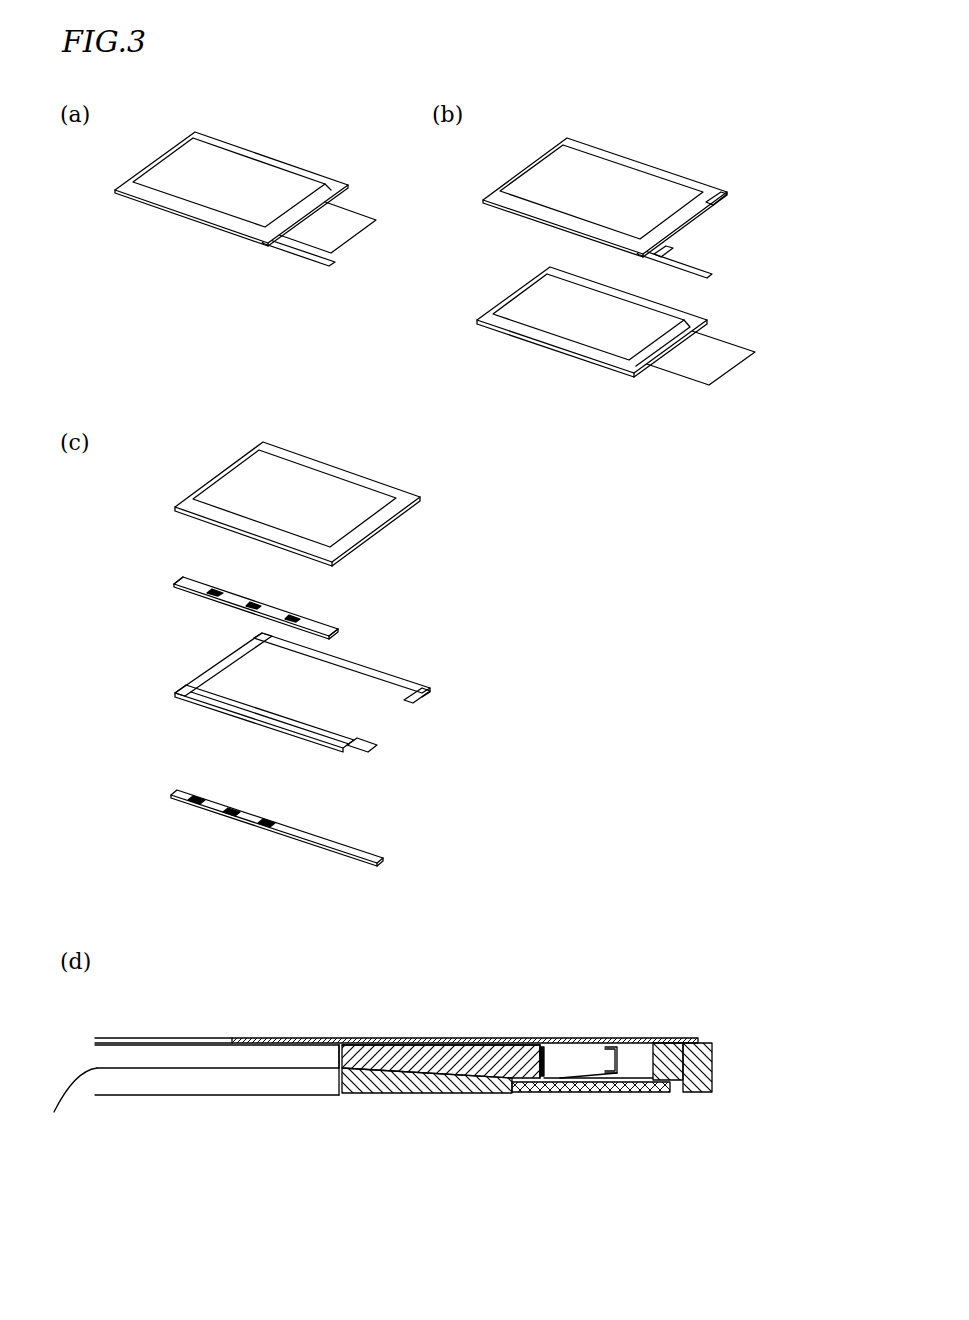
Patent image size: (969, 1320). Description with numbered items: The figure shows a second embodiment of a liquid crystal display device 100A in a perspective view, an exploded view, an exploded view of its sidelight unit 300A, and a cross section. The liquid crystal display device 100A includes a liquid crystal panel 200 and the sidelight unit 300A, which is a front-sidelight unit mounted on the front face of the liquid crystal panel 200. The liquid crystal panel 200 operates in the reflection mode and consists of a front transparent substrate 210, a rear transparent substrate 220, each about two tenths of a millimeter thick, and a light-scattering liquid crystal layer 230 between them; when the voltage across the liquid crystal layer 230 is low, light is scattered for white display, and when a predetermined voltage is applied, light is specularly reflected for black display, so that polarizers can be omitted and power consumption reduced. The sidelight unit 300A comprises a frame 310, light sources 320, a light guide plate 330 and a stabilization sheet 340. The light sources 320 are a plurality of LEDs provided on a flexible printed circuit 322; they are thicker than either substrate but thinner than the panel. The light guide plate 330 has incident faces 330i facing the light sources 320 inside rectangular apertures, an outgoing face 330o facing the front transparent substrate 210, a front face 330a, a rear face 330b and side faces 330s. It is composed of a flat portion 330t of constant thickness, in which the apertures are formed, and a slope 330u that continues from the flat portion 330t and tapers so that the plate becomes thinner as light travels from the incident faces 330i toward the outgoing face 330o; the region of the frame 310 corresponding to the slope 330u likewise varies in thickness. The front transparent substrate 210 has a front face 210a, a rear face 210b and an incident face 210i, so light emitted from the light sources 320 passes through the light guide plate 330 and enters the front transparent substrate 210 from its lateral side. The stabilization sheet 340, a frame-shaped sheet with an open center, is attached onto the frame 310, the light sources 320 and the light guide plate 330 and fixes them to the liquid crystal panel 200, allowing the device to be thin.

The liquid crystal display device 100A is at (324, 146).
The sidelight unit 300A is at (637, 160).
The liquid crystal panel 200 is at (547, 328).
The stabilization sheet 340 is at (308, 456).
The light guide plate 330 is at (304, 848).
The side faces 330s is at (178, 582).
The incident faces 330i is at (252, 611).
The outgoing face 330o is at (293, 615).
The front face 330a is at (320, 628).
The slope 330u is at (388, 1058).
The rear face 330b is at (447, 1095).
The flat portion 330t is at (512, 1062).
The frame 310 is at (177, 694).
The light sources 320 is at (196, 792).
The flexible printed circuit 322 is at (177, 790).
The front transparent substrate 210 is at (217, 1061).
The front face 210a is at (148, 1040).
The rear face 210b is at (145, 1070).
The incident face 210i is at (340, 1062).
The rear transparent substrate 220 is at (228, 1085).
The liquid crystal layer 230 is at (64, 1102).